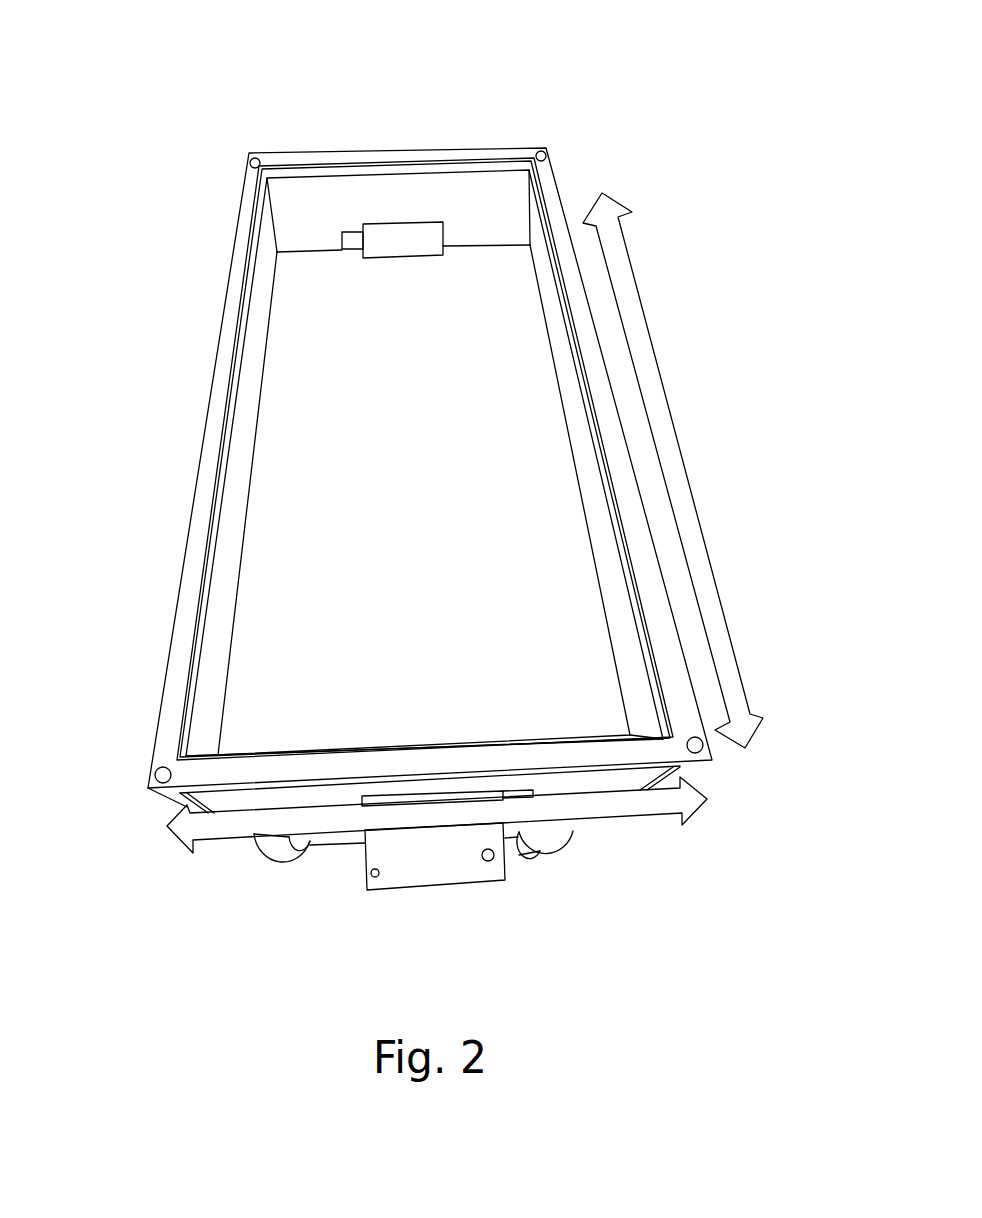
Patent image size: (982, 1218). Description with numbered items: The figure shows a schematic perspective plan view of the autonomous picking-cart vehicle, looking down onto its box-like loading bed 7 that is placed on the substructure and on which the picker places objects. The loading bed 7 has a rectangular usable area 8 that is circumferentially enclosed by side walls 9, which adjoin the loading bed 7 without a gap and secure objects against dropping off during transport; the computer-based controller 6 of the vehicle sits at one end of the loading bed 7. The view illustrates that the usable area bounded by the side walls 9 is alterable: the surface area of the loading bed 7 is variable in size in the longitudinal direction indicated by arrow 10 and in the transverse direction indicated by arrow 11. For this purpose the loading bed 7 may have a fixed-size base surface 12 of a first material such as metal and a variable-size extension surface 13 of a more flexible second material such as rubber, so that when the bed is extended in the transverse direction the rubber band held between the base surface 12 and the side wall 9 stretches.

The controller 6 is at (415, 857).
The loading bed 7 is at (369, 459).
The usable area 8 is at (285, 387).
The side wall 9 is at (321, 154).
The arrow 10 is at (667, 392).
The arrow 11 is at (220, 828).
The fixed-size base surface 12 is at (510, 498).
The variable-size extension surface 13 is at (218, 658).